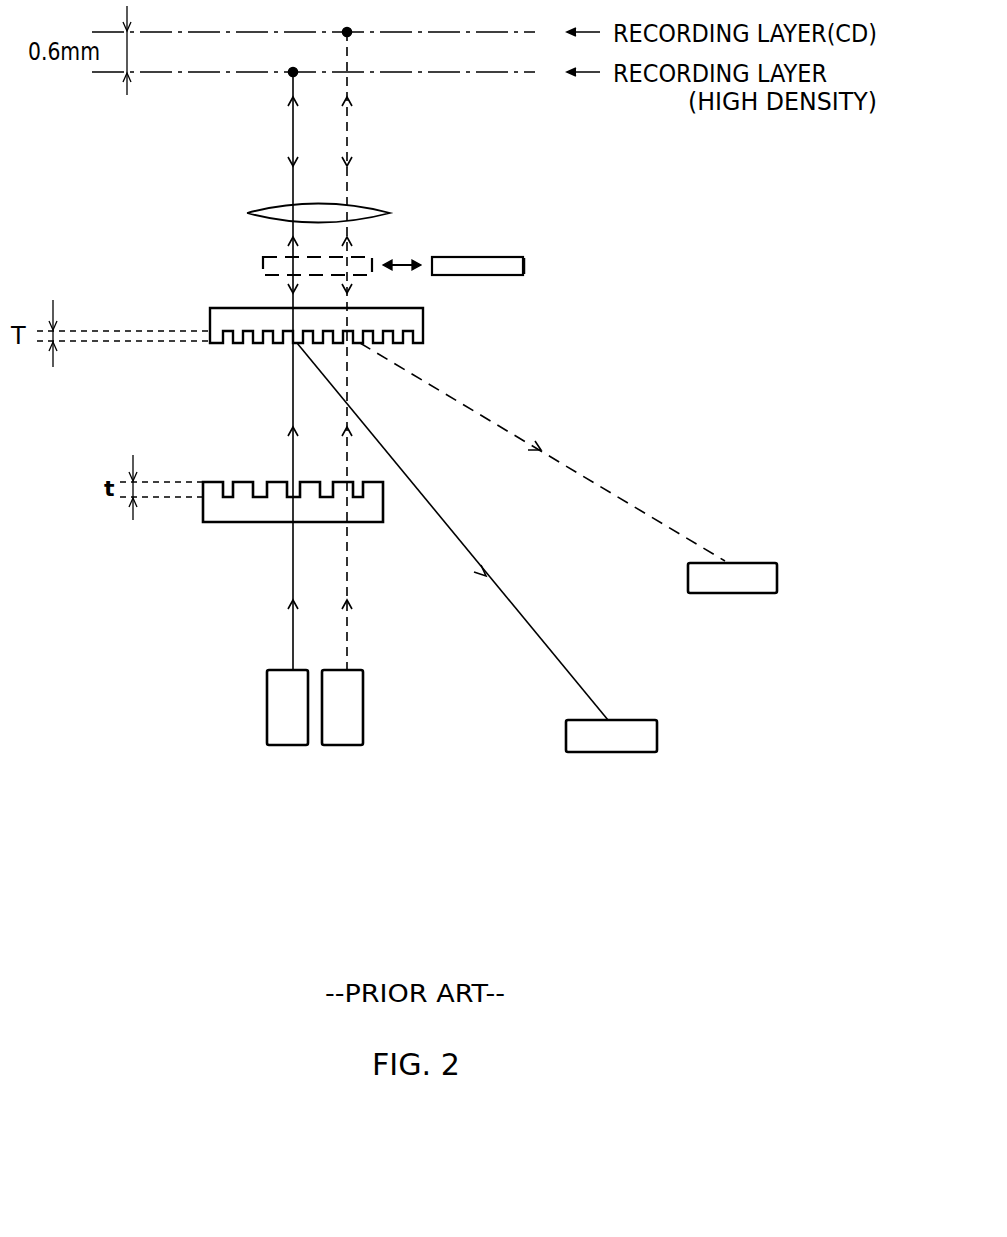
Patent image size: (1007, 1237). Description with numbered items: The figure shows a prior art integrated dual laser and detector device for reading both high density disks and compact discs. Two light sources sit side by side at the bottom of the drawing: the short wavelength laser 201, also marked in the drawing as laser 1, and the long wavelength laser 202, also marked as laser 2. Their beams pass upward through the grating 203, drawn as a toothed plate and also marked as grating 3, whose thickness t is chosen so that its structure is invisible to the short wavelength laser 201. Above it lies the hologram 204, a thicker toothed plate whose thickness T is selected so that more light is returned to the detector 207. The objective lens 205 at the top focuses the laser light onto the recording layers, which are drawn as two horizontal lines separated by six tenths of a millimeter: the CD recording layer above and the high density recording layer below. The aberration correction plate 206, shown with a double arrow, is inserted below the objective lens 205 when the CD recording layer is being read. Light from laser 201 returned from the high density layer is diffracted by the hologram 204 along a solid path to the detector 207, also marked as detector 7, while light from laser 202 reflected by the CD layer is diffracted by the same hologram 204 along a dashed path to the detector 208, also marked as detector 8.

The first semiconductor laser (high density disc light source) 1 is at (278, 711).
The second semiconductor laser (CD light source) 2 is at (348, 714).
The diffraction grating 3 is at (233, 512).
The first photodetector 7 is at (618, 742).
The second photodetector 8 is at (750, 583).
The laser 201 is at (232, 733).
The laser 202 is at (388, 733).
The grating 203 is at (270, 559).
The hologram 204 is at (228, 312).
The objective lens 205 is at (270, 207).
The aberration correction plate 206 is at (518, 262).
The detector 207 is at (611, 800).
The detector 208 is at (735, 632).